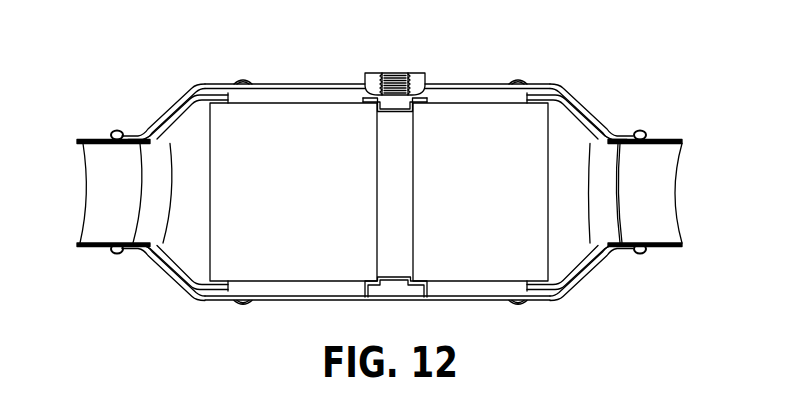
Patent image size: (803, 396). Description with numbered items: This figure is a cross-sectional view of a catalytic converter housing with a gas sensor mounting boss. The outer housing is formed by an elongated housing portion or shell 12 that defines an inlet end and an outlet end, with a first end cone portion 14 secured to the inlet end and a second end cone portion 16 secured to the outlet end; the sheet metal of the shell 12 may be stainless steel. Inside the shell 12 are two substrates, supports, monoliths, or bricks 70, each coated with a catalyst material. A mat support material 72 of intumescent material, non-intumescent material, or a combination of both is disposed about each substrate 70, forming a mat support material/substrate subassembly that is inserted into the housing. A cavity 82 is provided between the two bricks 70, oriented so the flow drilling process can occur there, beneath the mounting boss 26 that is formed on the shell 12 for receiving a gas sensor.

The shell 12 is at (538, 83).
The first end cone portion 14 is at (121, 119).
The second end cone portion 16 is at (598, 106).
The sensor boss 26 is at (372, 74).
The substrate 70 is at (270, 153).
The mat support material 72 is at (288, 97).
The cavity 82 is at (401, 112).